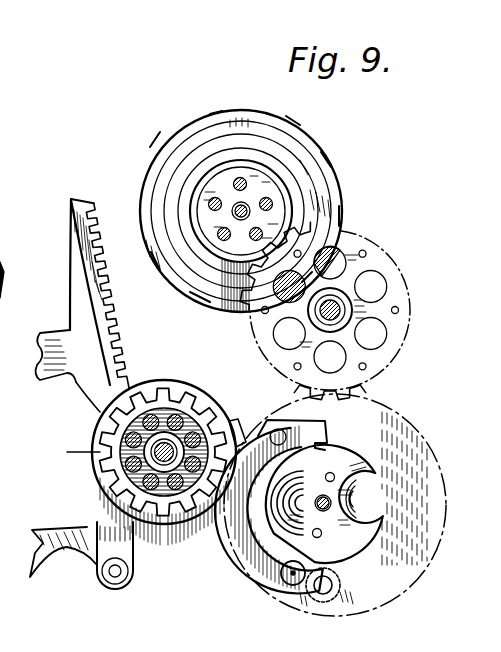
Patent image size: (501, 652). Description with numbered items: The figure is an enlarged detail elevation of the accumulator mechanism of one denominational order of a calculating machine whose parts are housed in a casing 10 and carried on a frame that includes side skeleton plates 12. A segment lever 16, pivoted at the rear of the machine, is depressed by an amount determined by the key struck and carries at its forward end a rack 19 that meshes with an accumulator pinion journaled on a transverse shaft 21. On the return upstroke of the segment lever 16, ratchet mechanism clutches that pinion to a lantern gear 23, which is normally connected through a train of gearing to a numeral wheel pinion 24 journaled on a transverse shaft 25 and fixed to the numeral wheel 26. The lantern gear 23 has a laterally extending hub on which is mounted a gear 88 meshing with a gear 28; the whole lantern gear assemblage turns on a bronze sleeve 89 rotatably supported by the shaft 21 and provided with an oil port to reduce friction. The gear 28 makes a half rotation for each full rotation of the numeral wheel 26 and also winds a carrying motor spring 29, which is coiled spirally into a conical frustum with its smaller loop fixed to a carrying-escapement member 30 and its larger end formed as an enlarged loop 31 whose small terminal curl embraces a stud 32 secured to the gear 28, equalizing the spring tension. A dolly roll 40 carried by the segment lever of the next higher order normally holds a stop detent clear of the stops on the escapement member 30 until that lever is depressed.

The casing 10 is at (8, 256).
The side skeleton plate 12 is at (80, 446).
The segment lever 16 is at (75, 372).
The rack 19 is at (122, 343).
The transverse shaft 21 is at (155, 461).
The lantern gear 23 is at (88, 463).
The numeral wheel pinion 24 is at (293, 238).
The transverse shaft 25 is at (200, 213).
The numeral wheel 26 is at (313, 163).
The gear 28 is at (413, 455).
The carrying motor spring 29 is at (353, 495).
The carrying-escapement member 30 is at (357, 532).
The enlarged loop 31 is at (275, 538).
The stud 32 is at (330, 594).
The dolly roll 40 is at (127, 577).
The gear 88 is at (108, 476).
The sleeve 89 is at (164, 468).